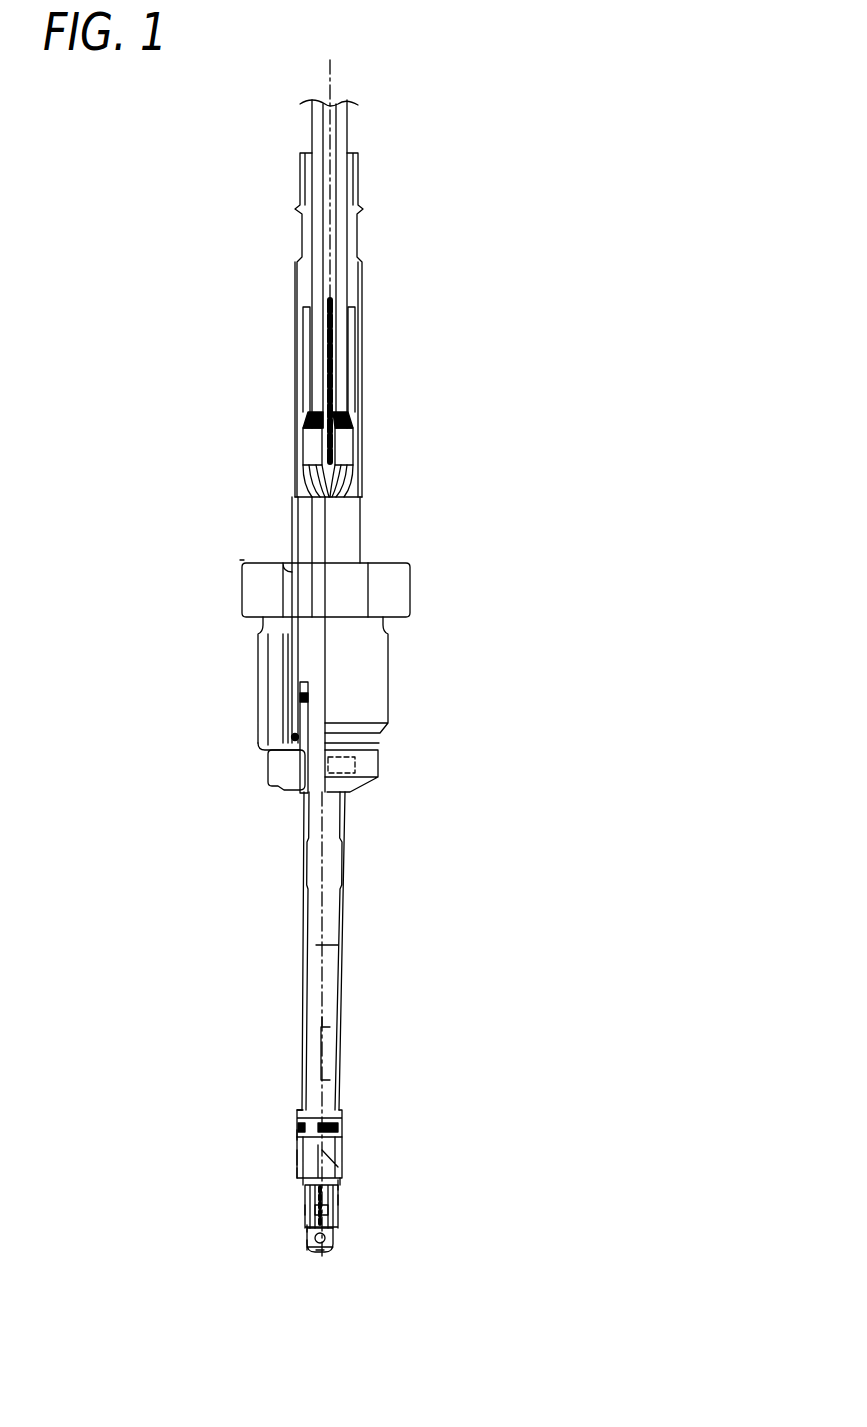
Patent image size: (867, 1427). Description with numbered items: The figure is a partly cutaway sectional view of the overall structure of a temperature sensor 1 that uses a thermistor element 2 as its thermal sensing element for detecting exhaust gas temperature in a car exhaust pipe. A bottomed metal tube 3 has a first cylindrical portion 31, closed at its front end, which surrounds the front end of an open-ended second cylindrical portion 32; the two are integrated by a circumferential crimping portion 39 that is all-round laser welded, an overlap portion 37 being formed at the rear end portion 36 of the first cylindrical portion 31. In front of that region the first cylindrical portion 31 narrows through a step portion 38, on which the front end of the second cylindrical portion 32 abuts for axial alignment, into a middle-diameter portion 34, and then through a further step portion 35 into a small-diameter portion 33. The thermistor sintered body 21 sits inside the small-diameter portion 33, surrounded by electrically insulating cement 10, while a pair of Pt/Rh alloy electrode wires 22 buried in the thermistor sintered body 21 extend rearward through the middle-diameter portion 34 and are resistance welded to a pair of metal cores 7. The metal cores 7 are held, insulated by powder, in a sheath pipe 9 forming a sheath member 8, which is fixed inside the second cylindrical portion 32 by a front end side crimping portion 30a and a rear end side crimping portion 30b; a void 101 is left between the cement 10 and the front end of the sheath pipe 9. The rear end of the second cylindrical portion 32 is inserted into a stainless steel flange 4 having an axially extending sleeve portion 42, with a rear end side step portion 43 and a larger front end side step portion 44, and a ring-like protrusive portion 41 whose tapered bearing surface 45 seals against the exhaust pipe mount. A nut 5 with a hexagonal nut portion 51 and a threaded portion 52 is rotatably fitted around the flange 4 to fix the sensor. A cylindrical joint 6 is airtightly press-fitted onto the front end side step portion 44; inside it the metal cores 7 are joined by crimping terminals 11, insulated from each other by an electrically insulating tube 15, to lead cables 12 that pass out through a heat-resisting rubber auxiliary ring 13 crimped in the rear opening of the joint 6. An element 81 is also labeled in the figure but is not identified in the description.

The temperature sensor 1 is at (208, 262).
The thermistor element 2 is at (402, 1202).
The metal tube 3 is at (457, 1085).
The flange 4 is at (130, 667).
The nut 5 is at (492, 570).
The joint 6 is at (292, 545).
The metal cores 7 is at (353, 475).
The sheath member 8 is at (323, 1013).
The sheath pipe 9 is at (317, 945).
The cement 10 is at (304, 1243).
The crimping terminals 11 is at (348, 436).
The lead cables 12 is at (340, 298).
The auxiliary ring 13 is at (358, 188).
The electrically insulating tube 15 is at (303, 483).
The thermistor sintered body 21 is at (335, 1236).
The electrode wires 22 is at (339, 1206).
The front end side crimping portion 30a is at (325, 1038).
The rear end side crimping portion 30b is at (341, 880).
The first cylindrical portion 31 is at (340, 1148).
The second cylindrical portion 32 is at (342, 1095).
The small-diameter portion 33 is at (320, 1253).
The middle-diameter portion 34 is at (304, 1208).
The step portion 35 is at (304, 1226).
The rear end portion 36 is at (299, 1171).
The overlap portion 37 is at (297, 1156).
The step portion 38 is at (340, 1183).
The crimping portion 39 is at (299, 1116).
The protrusive portion 41 is at (278, 765).
The sleeve portion 42 is at (180, 663).
The rear end side step portion 43 is at (301, 698).
The front end side step portion 44 is at (295, 733).
The bearing surface 45 is at (283, 781).
The hexagonal nut portion 51 is at (393, 588).
The threaded portion 52 is at (387, 658).
The gap 81 is at (301, 1135).
The void 101 is at (339, 1198).